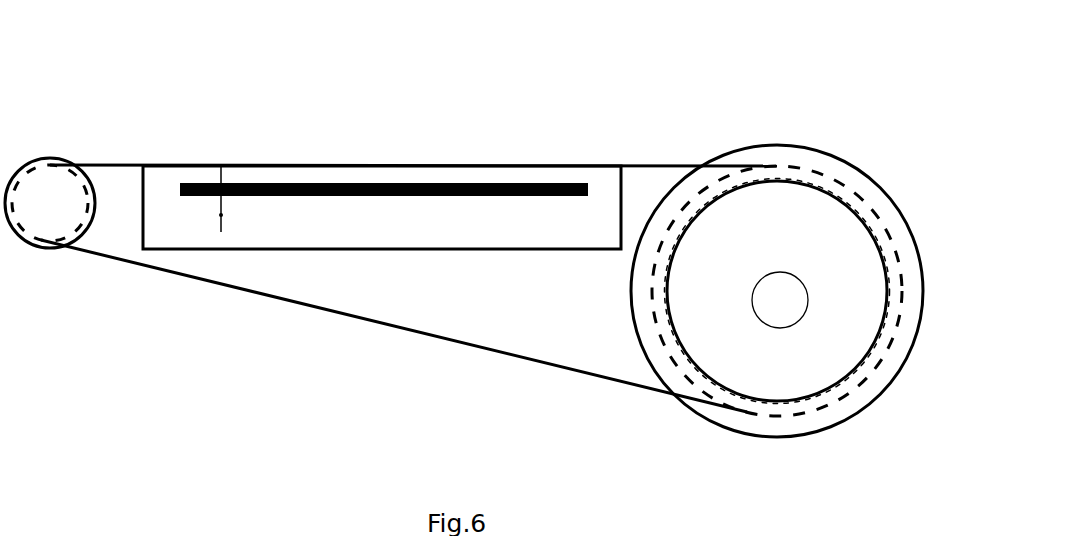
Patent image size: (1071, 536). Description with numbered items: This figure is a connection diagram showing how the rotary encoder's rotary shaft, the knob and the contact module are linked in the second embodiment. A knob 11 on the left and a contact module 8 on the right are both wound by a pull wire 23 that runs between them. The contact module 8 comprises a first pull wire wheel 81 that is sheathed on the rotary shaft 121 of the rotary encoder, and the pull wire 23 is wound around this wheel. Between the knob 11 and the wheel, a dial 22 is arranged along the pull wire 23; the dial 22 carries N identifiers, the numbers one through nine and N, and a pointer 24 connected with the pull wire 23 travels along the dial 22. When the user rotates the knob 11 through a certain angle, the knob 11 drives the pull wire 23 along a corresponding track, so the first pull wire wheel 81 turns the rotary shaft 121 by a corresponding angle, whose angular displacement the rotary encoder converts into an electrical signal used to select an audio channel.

The contact module 8 is at (835, 232).
The knob 11 is at (47, 203).
The dial 22 is at (293, 238).
The pull wire 23 is at (118, 165).
The pointer 24 is at (215, 228).
The first pull wire wheel 81 is at (808, 375).
The rotary shaft 121 is at (773, 302).